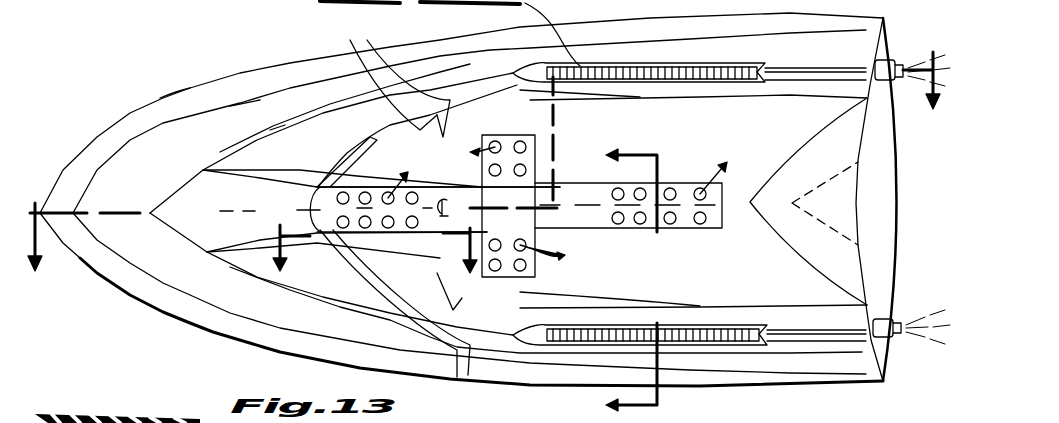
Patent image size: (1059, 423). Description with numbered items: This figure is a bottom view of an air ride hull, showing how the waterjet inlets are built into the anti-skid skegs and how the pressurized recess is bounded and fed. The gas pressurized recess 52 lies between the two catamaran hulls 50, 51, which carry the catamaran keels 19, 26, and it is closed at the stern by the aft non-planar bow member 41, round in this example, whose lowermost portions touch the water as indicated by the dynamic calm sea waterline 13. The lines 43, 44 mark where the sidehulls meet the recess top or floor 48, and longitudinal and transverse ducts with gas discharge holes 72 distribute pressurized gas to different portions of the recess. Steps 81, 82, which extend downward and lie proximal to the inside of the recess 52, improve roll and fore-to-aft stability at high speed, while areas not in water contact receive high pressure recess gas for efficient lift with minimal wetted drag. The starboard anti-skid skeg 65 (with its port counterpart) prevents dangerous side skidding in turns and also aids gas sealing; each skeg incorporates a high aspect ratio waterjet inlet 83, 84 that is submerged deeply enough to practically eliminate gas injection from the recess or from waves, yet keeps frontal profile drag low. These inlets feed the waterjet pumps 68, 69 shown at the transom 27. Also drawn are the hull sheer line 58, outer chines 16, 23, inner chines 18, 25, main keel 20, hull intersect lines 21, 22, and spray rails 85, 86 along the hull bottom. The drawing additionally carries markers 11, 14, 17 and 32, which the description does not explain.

The center block 11 is at (518, 233).
The dynamic calm sea waterline 13 is at (250, 143).
The section line 14 is at (490, 178).
The outer chine 16 is at (193, 118).
The section line 17 is at (591, 280).
The inner chine 18 is at (273, 126).
The catamaran keel 19 is at (275, 164).
The main keel 20 is at (120, 212).
The hull intersect line 21 is at (282, 186).
The hull intersect line 22 is at (260, 247).
The outer chine 23 is at (270, 347).
The inner chine 25 is at (287, 307).
The catamaran keel 26 is at (312, 228).
The transom 27 is at (880, 192).
The flow arrow 32 is at (602, 240).
The aft non-planar bow member 41 is at (820, 251).
The sidehull intersect line 43 is at (720, 98).
The sidehull intersect line 44 is at (730, 303).
The recess top or floor 48 is at (752, 259).
The catamaran hull 50 is at (356, 137).
The catamaran hull 51 is at (358, 301).
The gas pressurized recess 52 is at (780, 146).
The hull sheer line 58 is at (210, 337).
The starboard anti-skid skeg 65 is at (720, 347).
The waterjet pump 68 is at (893, 60).
The waterjet pump 69 is at (893, 319).
The gas discharge holes 72 is at (548, 140).
The step 81 is at (380, 75).
The step 82 is at (457, 377).
The waterjet inlet 83 is at (620, 67).
The waterjet inlet 84 is at (597, 333).
The spray rail 85 is at (607, 96).
The spray rail 86 is at (573, 318).